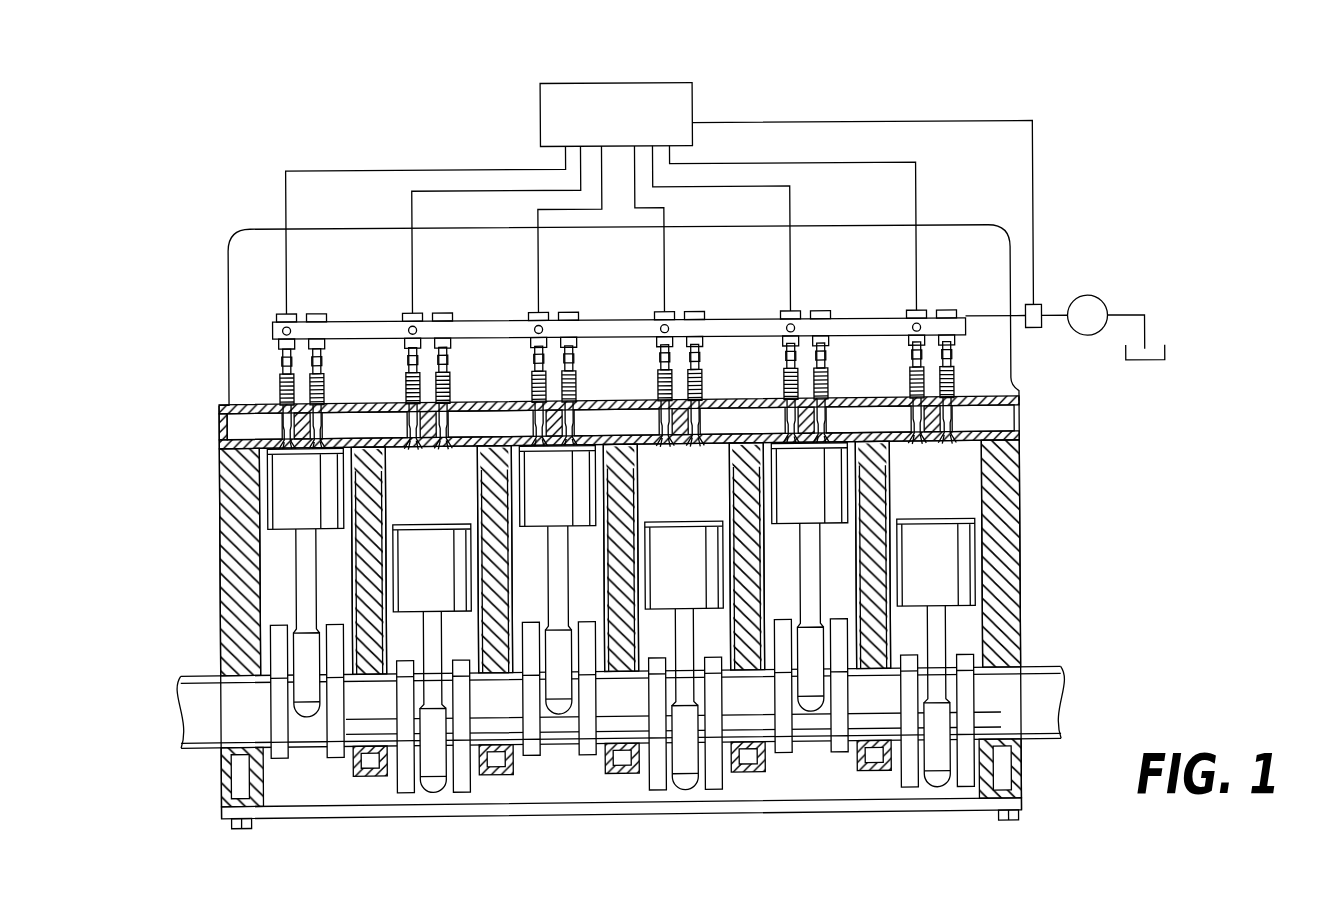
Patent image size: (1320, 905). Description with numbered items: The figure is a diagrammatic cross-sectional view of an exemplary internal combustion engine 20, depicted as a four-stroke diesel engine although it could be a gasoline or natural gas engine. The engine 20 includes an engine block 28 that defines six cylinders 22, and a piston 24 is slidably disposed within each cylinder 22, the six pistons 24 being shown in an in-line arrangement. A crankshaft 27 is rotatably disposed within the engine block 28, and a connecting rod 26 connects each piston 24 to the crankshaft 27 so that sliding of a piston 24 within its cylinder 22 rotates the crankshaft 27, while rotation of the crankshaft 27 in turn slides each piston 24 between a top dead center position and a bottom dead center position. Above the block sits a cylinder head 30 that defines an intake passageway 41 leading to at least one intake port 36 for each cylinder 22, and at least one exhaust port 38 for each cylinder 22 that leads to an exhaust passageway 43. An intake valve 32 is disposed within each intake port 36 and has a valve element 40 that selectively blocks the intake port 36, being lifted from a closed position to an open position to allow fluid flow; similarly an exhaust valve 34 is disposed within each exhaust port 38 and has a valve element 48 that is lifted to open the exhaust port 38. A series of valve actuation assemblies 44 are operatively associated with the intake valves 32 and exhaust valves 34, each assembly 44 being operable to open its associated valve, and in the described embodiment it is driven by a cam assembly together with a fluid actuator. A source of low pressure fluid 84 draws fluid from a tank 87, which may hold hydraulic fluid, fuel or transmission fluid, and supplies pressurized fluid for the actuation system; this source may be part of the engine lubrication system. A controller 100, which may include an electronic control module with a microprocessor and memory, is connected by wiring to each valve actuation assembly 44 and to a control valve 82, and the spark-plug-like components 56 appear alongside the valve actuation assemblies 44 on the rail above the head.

The internal combustion engine 20 is at (1070, 214).
The cylinder 22 is at (317, 584).
The piston 24 is at (294, 520).
The connecting rod 26 is at (300, 604).
The crankshaft 27 is at (205, 715).
The engine block 28 is at (230, 462).
The cylinder head 30 is at (1032, 412).
The intake valve 32 is at (408, 401).
The exhaust valve 34 is at (282, 402).
The intake port 36 is at (335, 458).
The exhaust port 38 is at (320, 458).
The valve element 40 is at (338, 458).
The intake passageway 41 is at (352, 436).
The exhaust passageway 43 is at (478, 436).
The valve actuation assembly 44 is at (285, 312).
The valve element 48 is at (236, 422).
The spark plug 56 is at (283, 360).
The control valve 82 is at (1035, 332).
The source of low pressure fluid 84 is at (1093, 304).
The tank 87 is at (1169, 350).
The controller 100 is at (600, 124).